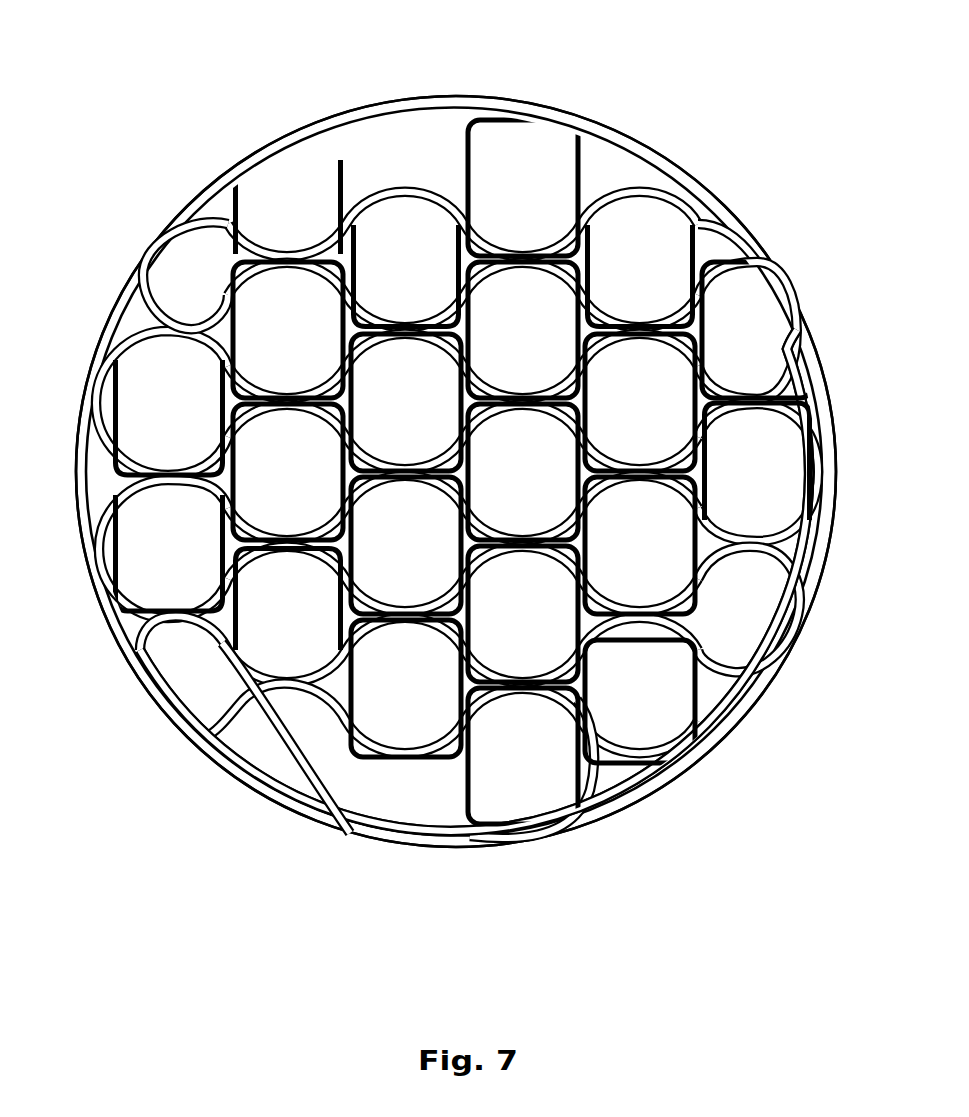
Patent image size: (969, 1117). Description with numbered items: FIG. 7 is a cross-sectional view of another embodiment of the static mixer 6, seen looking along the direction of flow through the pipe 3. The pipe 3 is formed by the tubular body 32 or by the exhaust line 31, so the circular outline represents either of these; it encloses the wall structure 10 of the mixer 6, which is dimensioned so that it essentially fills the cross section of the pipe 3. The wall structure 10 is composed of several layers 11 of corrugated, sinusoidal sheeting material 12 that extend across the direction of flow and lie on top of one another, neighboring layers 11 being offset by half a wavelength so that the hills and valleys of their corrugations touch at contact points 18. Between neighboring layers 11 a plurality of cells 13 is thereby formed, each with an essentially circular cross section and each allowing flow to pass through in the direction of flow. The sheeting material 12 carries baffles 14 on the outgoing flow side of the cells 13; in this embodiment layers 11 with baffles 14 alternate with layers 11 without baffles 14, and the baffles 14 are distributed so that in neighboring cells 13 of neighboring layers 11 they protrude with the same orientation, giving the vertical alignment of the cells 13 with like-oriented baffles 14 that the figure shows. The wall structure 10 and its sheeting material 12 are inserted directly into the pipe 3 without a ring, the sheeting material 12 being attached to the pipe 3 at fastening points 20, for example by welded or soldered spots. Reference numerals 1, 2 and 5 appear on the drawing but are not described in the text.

The heat exchanger 1 is at (674, 126).
The inlet 2 is at (207, 753).
The pipe 3 is at (710, 740).
The outlet 5 is at (474, 580).
The static mixer 6 is at (385, 802).
The wall structure 10 is at (456, 496).
The layers 11 is at (443, 486).
The sheeting material 12 is at (645, 470).
The cells 13 is at (534, 192).
The baffles 14 is at (397, 232).
The contact points 18 is at (403, 457).
The fastening points 20 is at (165, 255).
The exhaust line 31 is at (610, 820).
The tubular body 32 is at (456, 471).